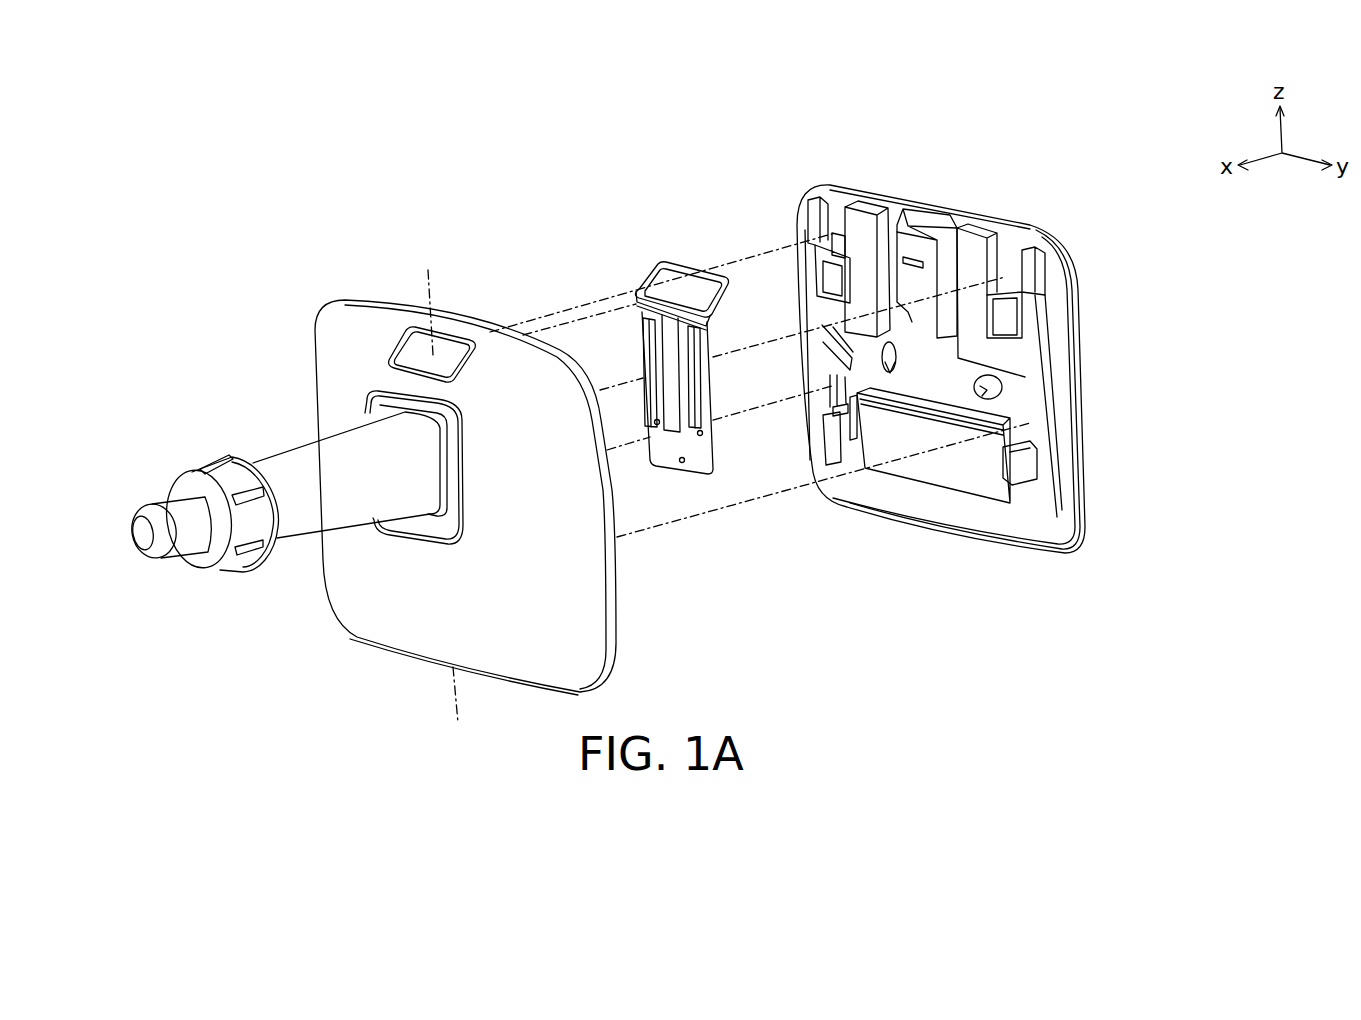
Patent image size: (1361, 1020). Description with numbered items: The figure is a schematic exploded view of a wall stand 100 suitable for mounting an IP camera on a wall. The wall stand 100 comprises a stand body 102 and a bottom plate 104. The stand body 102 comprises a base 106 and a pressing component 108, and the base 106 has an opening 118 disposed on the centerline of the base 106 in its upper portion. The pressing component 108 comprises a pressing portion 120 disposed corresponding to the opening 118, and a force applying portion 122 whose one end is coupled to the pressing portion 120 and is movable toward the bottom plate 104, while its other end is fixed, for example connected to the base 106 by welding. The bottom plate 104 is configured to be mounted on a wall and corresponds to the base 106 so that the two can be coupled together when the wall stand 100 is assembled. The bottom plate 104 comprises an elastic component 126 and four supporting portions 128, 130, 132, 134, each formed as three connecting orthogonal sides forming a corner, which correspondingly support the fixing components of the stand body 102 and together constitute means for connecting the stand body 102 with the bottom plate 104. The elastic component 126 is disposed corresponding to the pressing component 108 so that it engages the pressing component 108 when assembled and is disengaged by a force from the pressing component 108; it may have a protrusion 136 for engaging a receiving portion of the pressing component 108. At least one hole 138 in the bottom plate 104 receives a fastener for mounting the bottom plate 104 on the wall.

The wall stand 100 is at (330, 165).
The stand body 102 is at (291, 306).
The bottom plate 104 is at (1073, 220).
The base 106 is at (570, 571).
The pressing component 108 is at (614, 252).
The opening 118 is at (417, 353).
The pressing portion 120 is at (646, 276).
The force applying portion 122 is at (703, 333).
The elastic component 126 is at (920, 243).
The supporting portion 128 is at (1003, 315).
The supporting portion 130 is at (1017, 467).
The supporting portion 132 is at (830, 276).
The supporting portion 134 is at (833, 423).
The protrusion 136 is at (914, 263).
The hole 138 is at (987, 390).